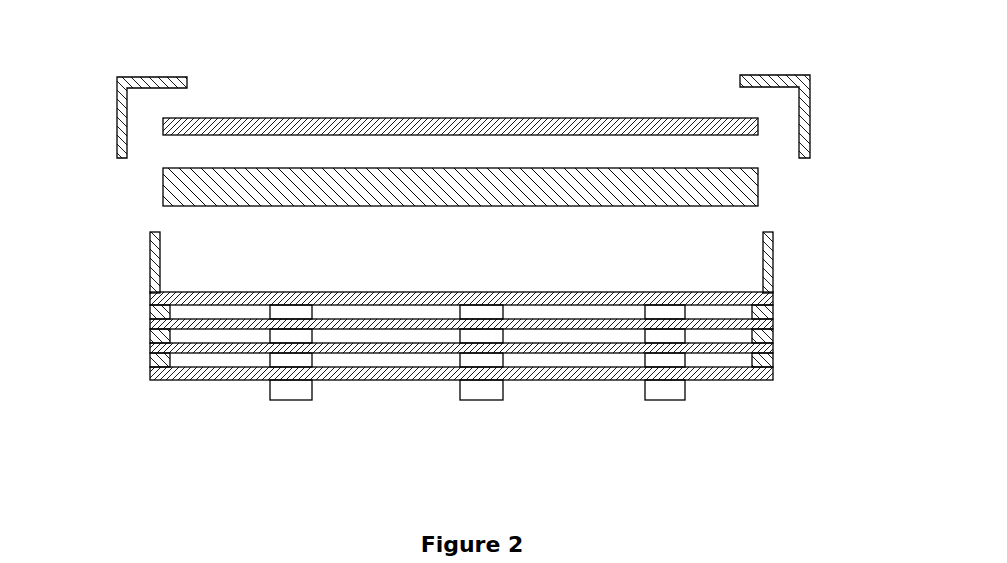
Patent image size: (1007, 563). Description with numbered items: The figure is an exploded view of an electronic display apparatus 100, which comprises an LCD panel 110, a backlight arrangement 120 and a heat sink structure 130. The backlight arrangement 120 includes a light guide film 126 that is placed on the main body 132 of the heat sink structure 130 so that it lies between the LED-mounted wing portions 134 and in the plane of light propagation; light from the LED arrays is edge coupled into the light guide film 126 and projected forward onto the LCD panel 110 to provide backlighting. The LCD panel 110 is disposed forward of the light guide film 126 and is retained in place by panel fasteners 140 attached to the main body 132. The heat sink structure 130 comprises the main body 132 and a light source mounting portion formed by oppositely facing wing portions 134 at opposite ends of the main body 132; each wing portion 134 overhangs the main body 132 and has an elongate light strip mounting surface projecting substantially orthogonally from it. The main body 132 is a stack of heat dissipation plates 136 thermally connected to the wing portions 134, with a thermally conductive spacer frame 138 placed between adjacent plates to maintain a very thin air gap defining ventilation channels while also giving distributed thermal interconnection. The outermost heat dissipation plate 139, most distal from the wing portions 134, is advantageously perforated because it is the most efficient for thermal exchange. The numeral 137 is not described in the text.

The electronic display apparatus 100 is at (567, 95).
The LCD panel 110 is at (280, 128).
The backlight arrangement 120 is at (140, 190).
The light guide film 126 is at (758, 185).
The heat sink structure 130 is at (772, 392).
The main body 132 is at (797, 305).
The wing portions 134 is at (150, 262).
The heat dissipation plates 136 is at (363, 300).
The support 137 is at (213, 562).
The spacer frame 138 is at (150, 311).
The outermost heat dissipation plate 139 is at (340, 372).
The panel fasteners 140 is at (148, 82).